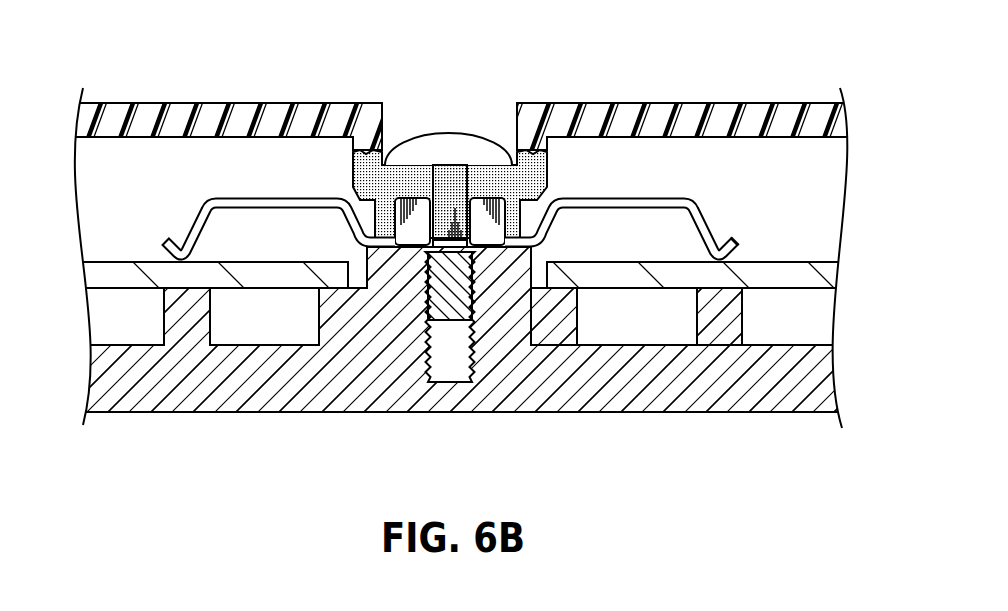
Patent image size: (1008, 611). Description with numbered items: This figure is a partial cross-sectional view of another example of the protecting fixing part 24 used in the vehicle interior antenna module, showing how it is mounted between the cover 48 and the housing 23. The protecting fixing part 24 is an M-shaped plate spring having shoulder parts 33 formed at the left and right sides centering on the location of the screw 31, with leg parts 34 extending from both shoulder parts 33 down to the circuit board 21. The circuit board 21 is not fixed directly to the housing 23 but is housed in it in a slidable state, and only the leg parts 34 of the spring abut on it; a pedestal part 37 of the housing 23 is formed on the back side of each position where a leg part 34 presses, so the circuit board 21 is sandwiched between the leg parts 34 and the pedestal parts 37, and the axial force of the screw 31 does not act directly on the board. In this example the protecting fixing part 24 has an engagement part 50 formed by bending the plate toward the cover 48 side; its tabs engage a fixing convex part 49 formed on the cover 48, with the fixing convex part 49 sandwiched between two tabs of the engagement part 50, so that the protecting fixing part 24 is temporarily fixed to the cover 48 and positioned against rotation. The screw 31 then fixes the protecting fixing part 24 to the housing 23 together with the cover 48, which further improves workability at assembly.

The circuit board 21 is at (776, 268).
The housing 23 is at (760, 394).
The protecting fixing part 24 is at (174, 210).
The screw 31 is at (482, 150).
The shoulder part 33 is at (637, 204).
The leg part 34 is at (718, 234).
The pedestal part 37 is at (728, 315).
The cover 48 is at (680, 102).
The fixing convex part 49 is at (452, 185).
The engagement part 50 is at (418, 217).